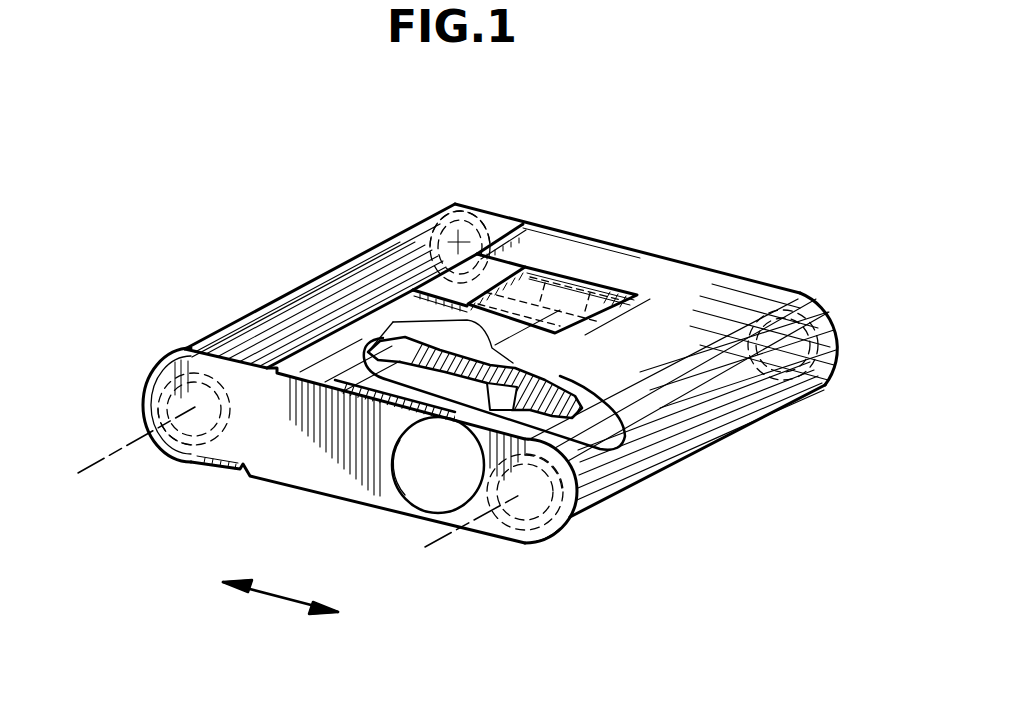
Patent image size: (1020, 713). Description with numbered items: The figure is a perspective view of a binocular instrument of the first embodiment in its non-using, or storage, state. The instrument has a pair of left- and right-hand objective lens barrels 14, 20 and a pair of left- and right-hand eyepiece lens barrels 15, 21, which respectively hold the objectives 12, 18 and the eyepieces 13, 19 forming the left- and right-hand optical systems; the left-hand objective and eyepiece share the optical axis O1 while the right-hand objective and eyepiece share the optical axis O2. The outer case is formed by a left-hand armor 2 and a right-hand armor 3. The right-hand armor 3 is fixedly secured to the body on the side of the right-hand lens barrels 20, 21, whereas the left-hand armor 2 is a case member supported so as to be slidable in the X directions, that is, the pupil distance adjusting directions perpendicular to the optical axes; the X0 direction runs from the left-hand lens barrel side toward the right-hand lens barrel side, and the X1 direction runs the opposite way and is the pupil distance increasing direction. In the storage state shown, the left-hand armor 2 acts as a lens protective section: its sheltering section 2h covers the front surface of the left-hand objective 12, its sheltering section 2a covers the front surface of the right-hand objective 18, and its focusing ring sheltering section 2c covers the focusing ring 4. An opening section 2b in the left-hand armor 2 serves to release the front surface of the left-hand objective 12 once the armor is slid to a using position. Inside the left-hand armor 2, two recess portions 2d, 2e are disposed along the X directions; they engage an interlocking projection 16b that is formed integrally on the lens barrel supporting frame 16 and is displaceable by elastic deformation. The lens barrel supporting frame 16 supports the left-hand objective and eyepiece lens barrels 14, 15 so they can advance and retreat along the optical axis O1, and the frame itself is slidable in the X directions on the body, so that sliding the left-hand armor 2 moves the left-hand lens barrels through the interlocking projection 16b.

The left-hand armor 2 is at (755, 412).
The sheltering section 2a is at (231, 446).
The opening section 2b is at (412, 517).
The focusing ring sheltering section 2c is at (565, 268).
The recess portion 2d is at (663, 453).
The recess portion 2e is at (318, 280).
The sheltering section 2h is at (537, 547).
The right-hand armor 3 is at (263, 310).
The focusing ring 4 is at (582, 265).
The left-hand objective 12 is at (510, 547).
The left-hand eyepiece 13 is at (820, 398).
The left-hand objective lens barrel 14 is at (565, 537).
The left-hand eyepiece lens barrel 15 is at (840, 353).
The lens barrel supporting frame 16 is at (627, 487).
The interlocking projection 16b is at (540, 373).
The right-hand objective 18 is at (185, 447).
The right-hand eyepiece 19 is at (397, 227).
The right-hand objective lens barrel 20 is at (143, 402).
The right-hand eyepiece lens barrel 21 is at (447, 195).
The optical axis O1 is at (452, 540).
The optical axis O2 is at (102, 465).
The X directions X is at (297, 575).
The X0 direction X0 is at (240, 590).
The X1 direction X1 is at (318, 620).